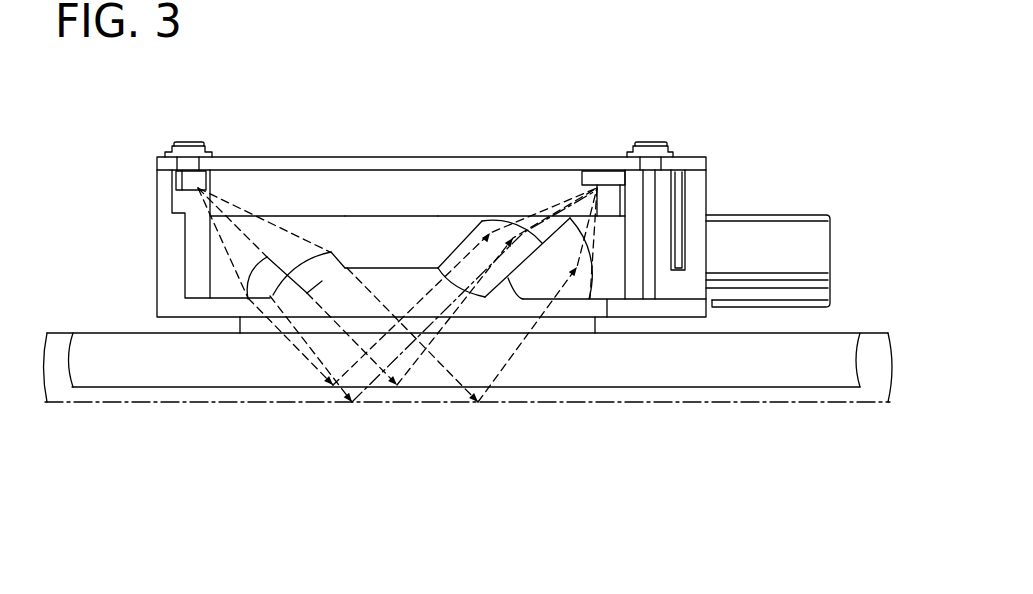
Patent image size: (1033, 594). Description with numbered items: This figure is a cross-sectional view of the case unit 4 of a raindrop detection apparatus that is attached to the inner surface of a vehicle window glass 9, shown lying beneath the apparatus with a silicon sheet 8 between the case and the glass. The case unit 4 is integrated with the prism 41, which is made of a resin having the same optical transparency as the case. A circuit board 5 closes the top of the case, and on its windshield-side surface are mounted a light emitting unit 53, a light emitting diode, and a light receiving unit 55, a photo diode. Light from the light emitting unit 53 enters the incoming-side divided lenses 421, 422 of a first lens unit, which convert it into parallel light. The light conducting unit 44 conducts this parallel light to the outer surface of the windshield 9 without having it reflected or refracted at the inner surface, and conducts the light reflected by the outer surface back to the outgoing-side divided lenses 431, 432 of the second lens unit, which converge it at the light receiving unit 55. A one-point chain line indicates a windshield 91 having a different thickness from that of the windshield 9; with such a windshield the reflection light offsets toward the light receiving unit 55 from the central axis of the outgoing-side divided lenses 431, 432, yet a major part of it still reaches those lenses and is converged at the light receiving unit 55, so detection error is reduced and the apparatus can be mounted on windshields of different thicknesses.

The case unit 4 is at (443, 289).
The circuit board 5 is at (331, 156).
The silicon sheet 8 is at (585, 327).
The window glass 9 is at (107, 365).
The windshield 91 is at (163, 392).
The prism 41 is at (421, 216).
The light conducting unit 44 is at (409, 264).
The incoming-side divided lens 421 is at (268, 283).
The incoming-side divided lens 422 is at (318, 275).
The outgoing-side divided lens 431 is at (542, 285).
The outgoing-side divided lens 432 is at (492, 278).
The light emitting unit 53 is at (183, 186).
The light receiving unit 55 is at (594, 180).